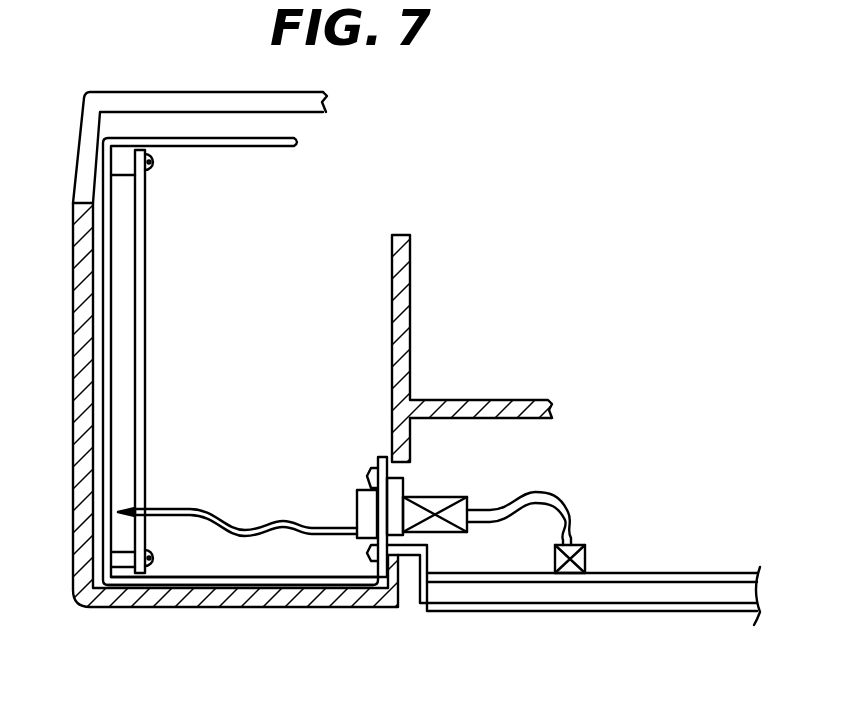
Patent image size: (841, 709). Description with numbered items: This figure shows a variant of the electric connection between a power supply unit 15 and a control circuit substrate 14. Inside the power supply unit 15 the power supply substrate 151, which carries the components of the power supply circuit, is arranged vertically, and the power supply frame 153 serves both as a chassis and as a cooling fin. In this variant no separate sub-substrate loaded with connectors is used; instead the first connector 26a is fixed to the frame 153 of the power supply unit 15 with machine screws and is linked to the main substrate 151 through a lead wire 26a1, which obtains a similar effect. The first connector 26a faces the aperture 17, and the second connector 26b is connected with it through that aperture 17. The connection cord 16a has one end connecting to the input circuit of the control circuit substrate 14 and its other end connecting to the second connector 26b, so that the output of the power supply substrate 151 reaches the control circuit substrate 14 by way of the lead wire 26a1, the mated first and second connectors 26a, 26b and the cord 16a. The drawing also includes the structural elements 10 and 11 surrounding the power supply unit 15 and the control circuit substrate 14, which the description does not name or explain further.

The housing 10 is at (92, 605).
The frame member 11 is at (557, 612).
The control circuit substrate 14 is at (707, 573).
The power supply unit 15 is at (105, 350).
The power supply substrate 151 is at (143, 302).
The power supply frame 153 is at (196, 567).
The connection cord 16a is at (573, 512).
The aperture 17 is at (403, 466).
The first connector 26a is at (358, 510).
The lead wire 26a1 is at (227, 525).
The second connector 26b is at (466, 490).